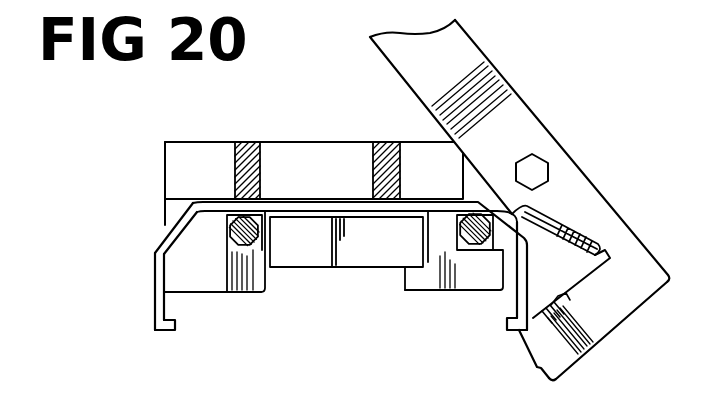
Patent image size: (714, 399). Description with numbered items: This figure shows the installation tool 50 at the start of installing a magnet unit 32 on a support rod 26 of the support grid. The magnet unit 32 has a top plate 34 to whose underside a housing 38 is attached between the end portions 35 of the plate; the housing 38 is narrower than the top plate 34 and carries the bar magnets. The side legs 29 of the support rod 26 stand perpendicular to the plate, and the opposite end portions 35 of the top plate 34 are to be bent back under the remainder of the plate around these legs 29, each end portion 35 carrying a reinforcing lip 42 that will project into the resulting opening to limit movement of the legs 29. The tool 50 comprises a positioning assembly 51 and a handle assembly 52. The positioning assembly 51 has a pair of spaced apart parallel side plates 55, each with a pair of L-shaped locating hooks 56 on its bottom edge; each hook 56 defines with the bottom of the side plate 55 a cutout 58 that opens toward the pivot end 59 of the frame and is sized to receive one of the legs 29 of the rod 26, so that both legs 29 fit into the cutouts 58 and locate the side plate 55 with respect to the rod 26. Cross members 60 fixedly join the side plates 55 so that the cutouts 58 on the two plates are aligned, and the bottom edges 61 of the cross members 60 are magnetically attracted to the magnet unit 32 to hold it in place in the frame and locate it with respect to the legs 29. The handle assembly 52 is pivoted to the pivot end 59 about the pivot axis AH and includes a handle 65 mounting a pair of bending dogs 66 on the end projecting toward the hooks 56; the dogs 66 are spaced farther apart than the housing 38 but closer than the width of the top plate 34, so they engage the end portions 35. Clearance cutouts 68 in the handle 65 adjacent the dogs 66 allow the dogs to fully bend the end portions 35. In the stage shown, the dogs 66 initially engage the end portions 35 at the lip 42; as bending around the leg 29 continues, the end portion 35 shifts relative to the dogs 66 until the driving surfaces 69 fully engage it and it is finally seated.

The support rod 26 is at (220, 226).
The side leg 29 is at (258, 232).
The magnet unit 32 is at (152, 250).
The top plate 34 is at (340, 183).
The end portion 35 is at (157, 287).
The housing 38 is at (355, 262).
The reinforcing lip 42 is at (173, 330).
The installation tool 50 is at (416, 100).
The positioning assembly 51 is at (175, 127).
The handle assembly 52 is at (547, 122).
The side plate 55 is at (363, 132).
The locating hook 56 is at (222, 292).
The cutout 58 is at (334, 252).
The pivot end 59 is at (490, 207).
The cross member 60 is at (237, 163).
The bottom edge 61 is at (258, 190).
The handle 65 is at (477, 63).
The bending dog 66 is at (600, 328).
The clearance cutout 68 is at (572, 280).
The driving surface 69 is at (552, 308).
The pivot axis AH is at (531, 172).